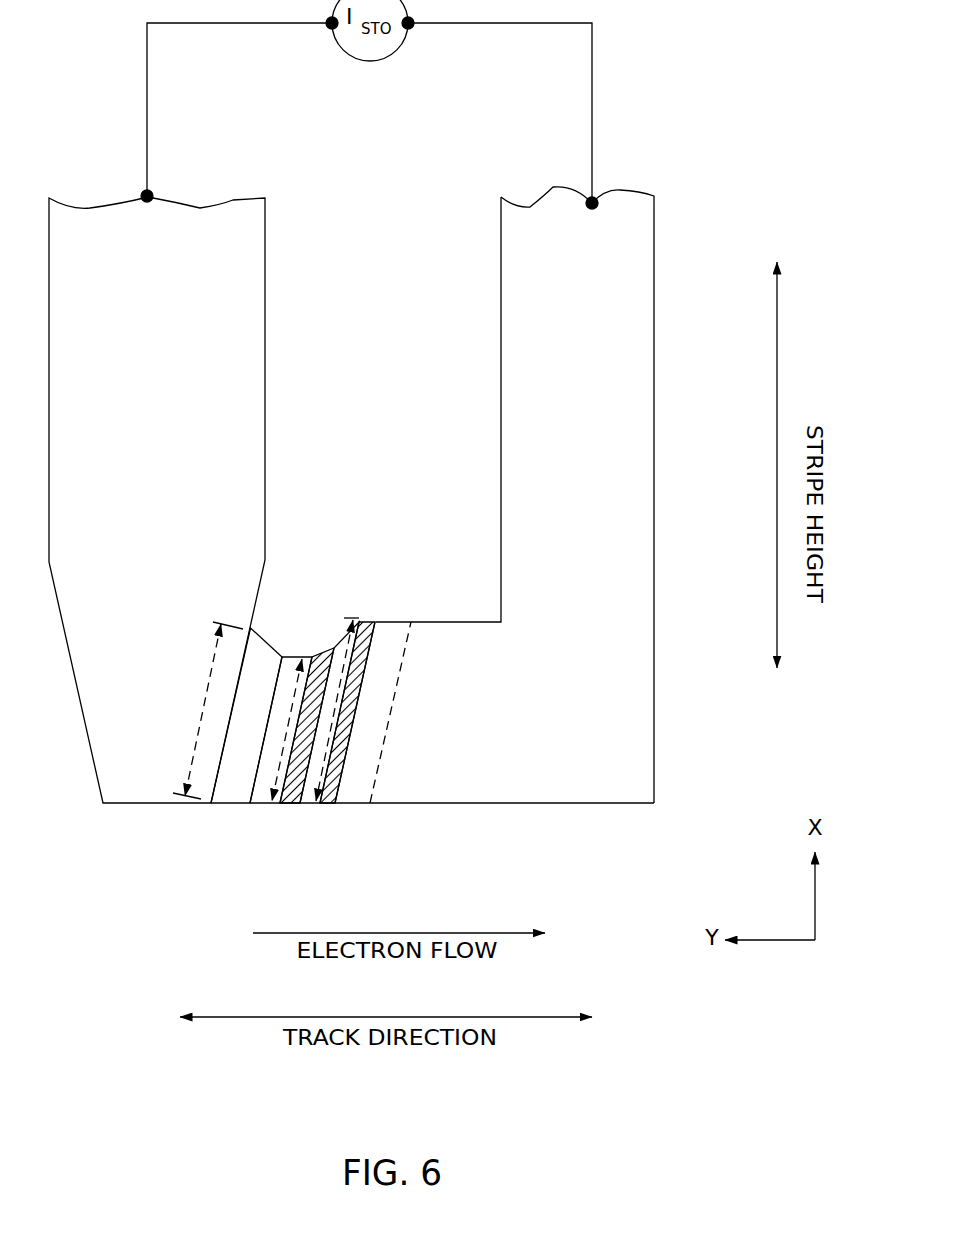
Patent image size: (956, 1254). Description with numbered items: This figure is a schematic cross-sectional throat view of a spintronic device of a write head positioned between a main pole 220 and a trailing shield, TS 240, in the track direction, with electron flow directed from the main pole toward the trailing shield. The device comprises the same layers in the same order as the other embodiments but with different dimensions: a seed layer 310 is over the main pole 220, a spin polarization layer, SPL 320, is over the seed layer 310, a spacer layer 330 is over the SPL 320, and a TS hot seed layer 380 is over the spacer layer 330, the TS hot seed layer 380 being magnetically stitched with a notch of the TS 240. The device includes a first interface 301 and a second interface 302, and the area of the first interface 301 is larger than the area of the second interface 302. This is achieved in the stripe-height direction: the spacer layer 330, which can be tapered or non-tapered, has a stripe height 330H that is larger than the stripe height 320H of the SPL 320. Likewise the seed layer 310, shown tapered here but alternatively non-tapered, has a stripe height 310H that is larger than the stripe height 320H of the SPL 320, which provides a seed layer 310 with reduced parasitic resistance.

The main pole 220 is at (128, 468).
The trailing shield 240 is at (552, 467).
The first interface 301 is at (360, 670).
The second interface 302 is at (315, 700).
The seed layer 310 is at (228, 805).
The spin polarization layer 320 is at (257, 805).
The spacer layer 330 is at (300, 805).
The TS hot seed layer 380 is at (348, 805).
The stripe height of the seed layer 310H is at (200, 725).
The stripe height of the SPL 320H is at (293, 687).
The stripe height of the spacer layer 330H is at (340, 645).